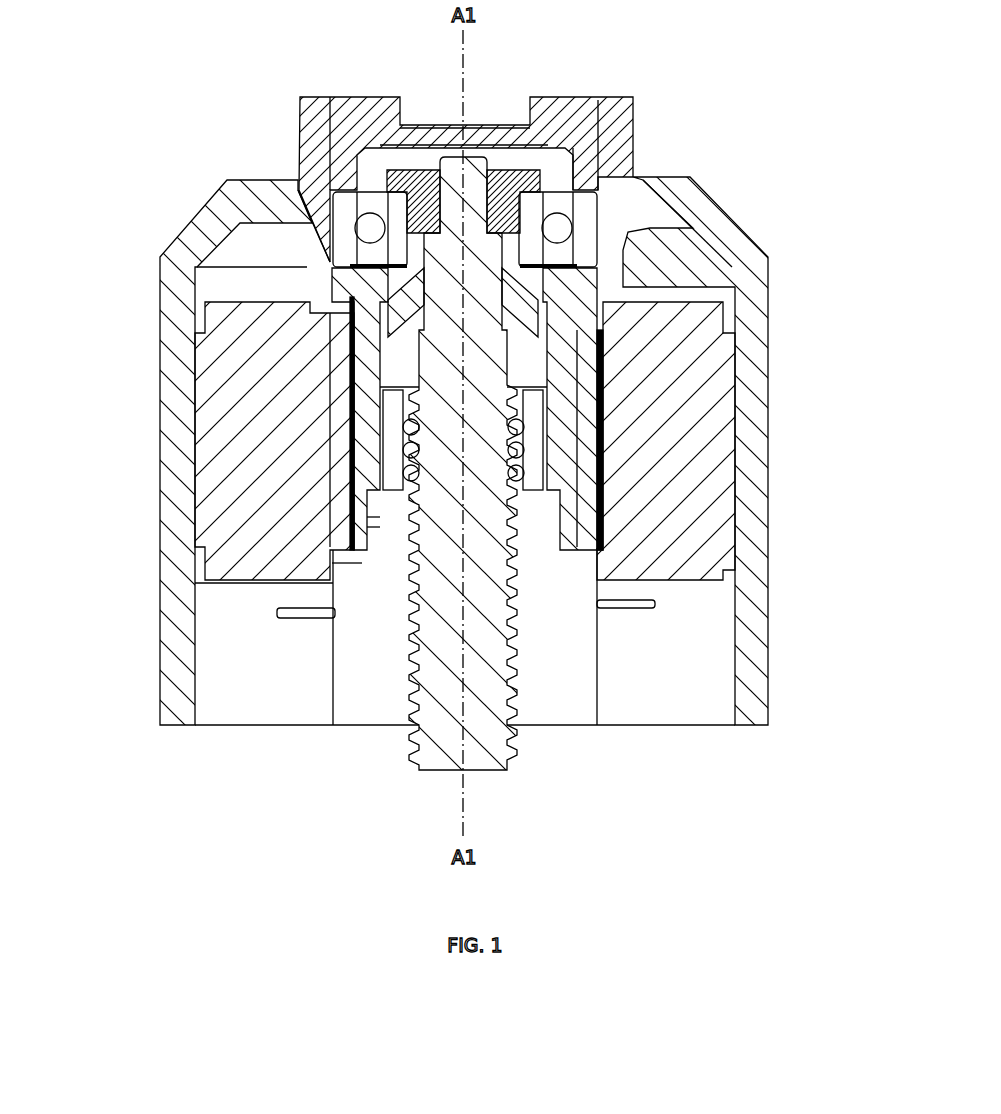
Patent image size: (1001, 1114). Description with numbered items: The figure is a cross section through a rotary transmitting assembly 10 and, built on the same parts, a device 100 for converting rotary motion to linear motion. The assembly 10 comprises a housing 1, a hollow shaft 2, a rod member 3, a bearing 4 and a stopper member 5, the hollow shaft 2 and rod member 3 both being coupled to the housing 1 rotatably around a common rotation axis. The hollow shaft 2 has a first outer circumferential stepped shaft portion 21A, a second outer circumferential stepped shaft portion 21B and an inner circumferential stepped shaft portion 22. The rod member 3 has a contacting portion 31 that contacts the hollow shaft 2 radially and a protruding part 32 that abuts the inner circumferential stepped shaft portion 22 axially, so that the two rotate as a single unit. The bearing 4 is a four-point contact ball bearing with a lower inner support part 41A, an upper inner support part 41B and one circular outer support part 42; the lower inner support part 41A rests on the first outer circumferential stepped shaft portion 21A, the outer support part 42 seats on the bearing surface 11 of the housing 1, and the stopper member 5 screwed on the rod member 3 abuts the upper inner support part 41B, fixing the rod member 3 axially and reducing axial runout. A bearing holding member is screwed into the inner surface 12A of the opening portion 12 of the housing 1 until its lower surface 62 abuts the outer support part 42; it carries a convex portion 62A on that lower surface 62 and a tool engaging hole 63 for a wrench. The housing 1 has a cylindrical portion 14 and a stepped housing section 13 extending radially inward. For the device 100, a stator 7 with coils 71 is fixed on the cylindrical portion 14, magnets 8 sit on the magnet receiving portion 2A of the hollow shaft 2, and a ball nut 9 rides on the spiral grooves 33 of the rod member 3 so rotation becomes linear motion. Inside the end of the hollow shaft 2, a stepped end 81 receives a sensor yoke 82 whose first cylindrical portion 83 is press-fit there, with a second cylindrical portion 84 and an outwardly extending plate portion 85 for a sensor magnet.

The housing 1 is at (166, 553).
The hollow shaft 2 is at (563, 462).
The magnet receiving portion 2A is at (350, 393).
The rod member 3 is at (438, 737).
The bearing 4 is at (543, 228).
The stopper member 5 is at (423, 182).
The stator 7 is at (682, 568).
The magnets 8 is at (596, 548).
The ball nut 9 is at (397, 490).
The rotary transmitting assembly 10 is at (188, 188).
The bearing surface 11 is at (328, 243).
The opening portion 12 is at (622, 172).
The inner surface 12A is at (566, 147).
The stepped housing section 13 is at (693, 195).
The cylindrical portion 14 is at (757, 476).
The first outer circumferential stepped shaft portion 21A is at (390, 268).
The second outer circumferential stepped shaft portion 21B is at (373, 335).
The inner circumferential stepped shaft portion 22 is at (427, 325).
The contacting portion 31 is at (427, 280).
The protruding part 32 is at (510, 337).
The spiral grooves 33 is at (413, 705).
The lower inner support part 41A is at (347, 222).
The upper inner support part 41B is at (393, 205).
The circular outer support part 42 is at (392, 246).
The lower surface 62 is at (480, 143).
The convex portion 62A is at (601, 138).
The tool engaging hole 63 is at (517, 112).
The coils 71 is at (600, 487).
The stepped end 81 is at (328, 585).
The sensor yoke 82 is at (348, 563).
The first cylindrical portion 83 is at (363, 517).
The second cylindrical portion 84 is at (372, 527).
The plate portion 85 is at (293, 623).
The device for converting rotary motion to linear motion 100 is at (133, 632).